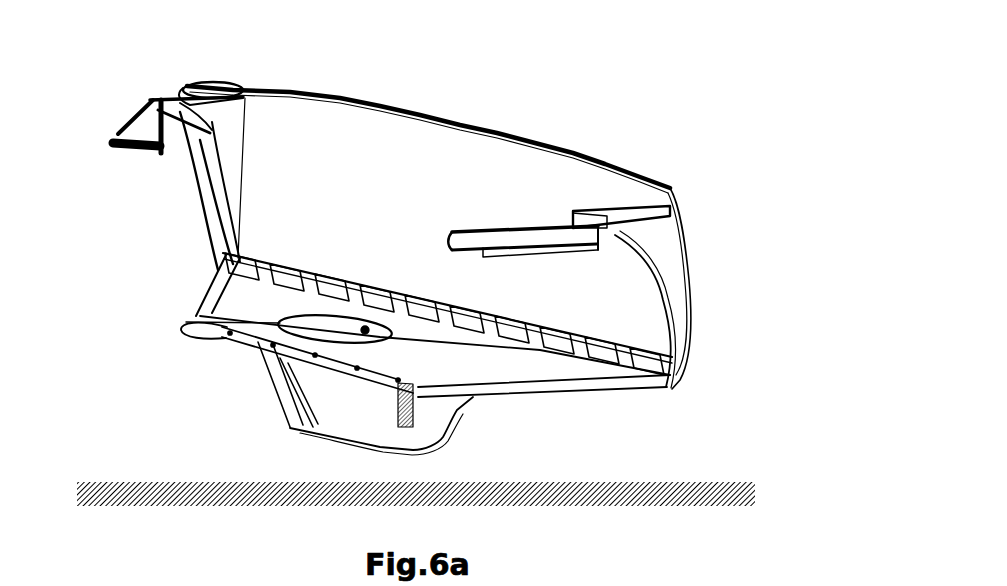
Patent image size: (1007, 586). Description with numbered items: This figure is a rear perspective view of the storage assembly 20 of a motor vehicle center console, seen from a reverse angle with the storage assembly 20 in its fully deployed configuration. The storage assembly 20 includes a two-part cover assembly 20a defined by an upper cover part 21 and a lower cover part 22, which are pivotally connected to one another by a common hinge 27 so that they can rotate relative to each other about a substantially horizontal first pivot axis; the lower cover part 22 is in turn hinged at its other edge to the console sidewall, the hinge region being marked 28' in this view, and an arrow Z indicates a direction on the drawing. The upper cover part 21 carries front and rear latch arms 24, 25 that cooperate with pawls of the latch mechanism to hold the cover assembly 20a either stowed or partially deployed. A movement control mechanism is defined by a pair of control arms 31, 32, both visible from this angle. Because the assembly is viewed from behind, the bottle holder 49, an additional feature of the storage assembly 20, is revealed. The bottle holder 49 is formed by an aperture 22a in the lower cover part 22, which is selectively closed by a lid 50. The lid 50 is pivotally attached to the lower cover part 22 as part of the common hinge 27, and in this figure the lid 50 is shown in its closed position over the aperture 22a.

The storage assembly 20 is at (730, 215).
The two-part cover assembly 20a is at (727, 343).
The upper cover part 21 is at (497, 133).
The lower cover part 22 is at (527, 398).
The aperture 22a is at (282, 321).
The front latch arm 24 is at (240, 98).
The rear latch arm 25 is at (607, 210).
The common hinge 27 is at (567, 345).
The leg 28' is at (221, 402).
The control arm 31 is at (520, 220).
The control arm 32 is at (135, 125).
The bottle holder 49 is at (290, 298).
The lid 50 is at (365, 330).
The direction Z is at (405, 86).